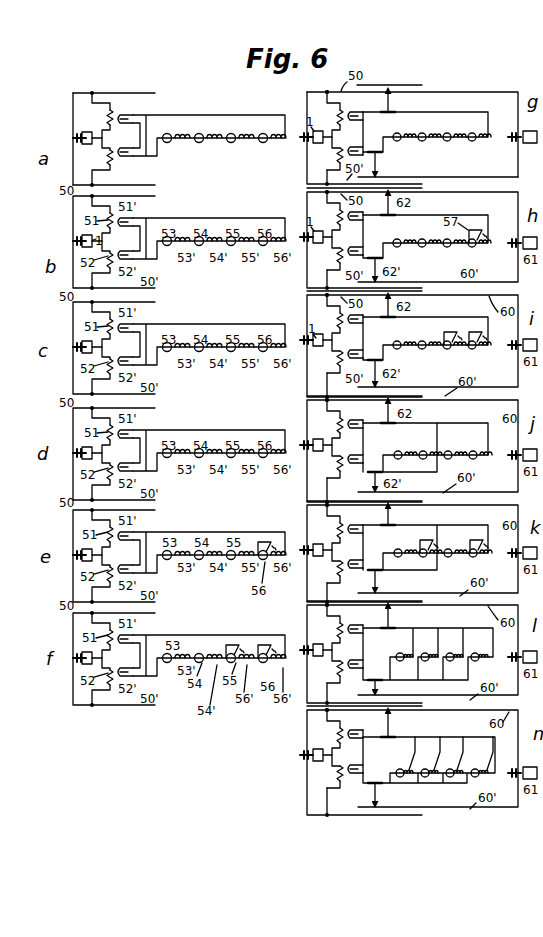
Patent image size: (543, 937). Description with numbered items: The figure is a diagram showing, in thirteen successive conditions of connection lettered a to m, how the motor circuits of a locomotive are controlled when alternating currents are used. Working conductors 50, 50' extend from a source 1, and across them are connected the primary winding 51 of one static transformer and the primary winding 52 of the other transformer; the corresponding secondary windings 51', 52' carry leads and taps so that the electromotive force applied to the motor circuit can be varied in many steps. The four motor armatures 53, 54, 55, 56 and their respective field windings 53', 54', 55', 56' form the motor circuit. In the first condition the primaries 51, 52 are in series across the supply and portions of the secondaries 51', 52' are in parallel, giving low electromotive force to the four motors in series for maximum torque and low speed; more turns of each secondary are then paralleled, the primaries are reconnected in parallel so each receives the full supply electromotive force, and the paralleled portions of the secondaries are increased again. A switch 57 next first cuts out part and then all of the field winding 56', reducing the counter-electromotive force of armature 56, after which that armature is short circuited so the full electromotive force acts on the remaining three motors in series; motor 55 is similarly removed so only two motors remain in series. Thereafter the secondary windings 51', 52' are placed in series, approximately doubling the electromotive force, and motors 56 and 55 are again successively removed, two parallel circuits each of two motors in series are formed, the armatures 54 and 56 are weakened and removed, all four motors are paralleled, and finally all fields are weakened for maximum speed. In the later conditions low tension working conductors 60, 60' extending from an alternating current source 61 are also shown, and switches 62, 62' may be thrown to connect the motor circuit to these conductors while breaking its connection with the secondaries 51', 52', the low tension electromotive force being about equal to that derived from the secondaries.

The source 1 is at (83, 133).
The working conductor 50 is at (114, 85).
The working conductor 50' is at (116, 178).
The primary winding 51 is at (102, 118).
The primary winding 52 is at (102, 154).
The secondary winding 51' is at (127, 112).
The secondary winding 52' is at (127, 161).
The motor armature 53 is at (168, 146).
The field winding 53' is at (185, 153).
The motor armature 54 is at (200, 146).
The field winding 54' is at (217, 153).
The motor armature 55 is at (232, 146).
The field winding 55' is at (249, 153).
The motor armature 56 is at (263, 146).
The field winding 56' is at (281, 153).
The switch 57 is at (268, 541).
The low tension working conductor 60 is at (412, 127).
The low tension working conductor 60' is at (438, 169).
The alternating current source 61 is at (523, 146).
The switch 62 is at (396, 100).
The switch 62' is at (384, 164).